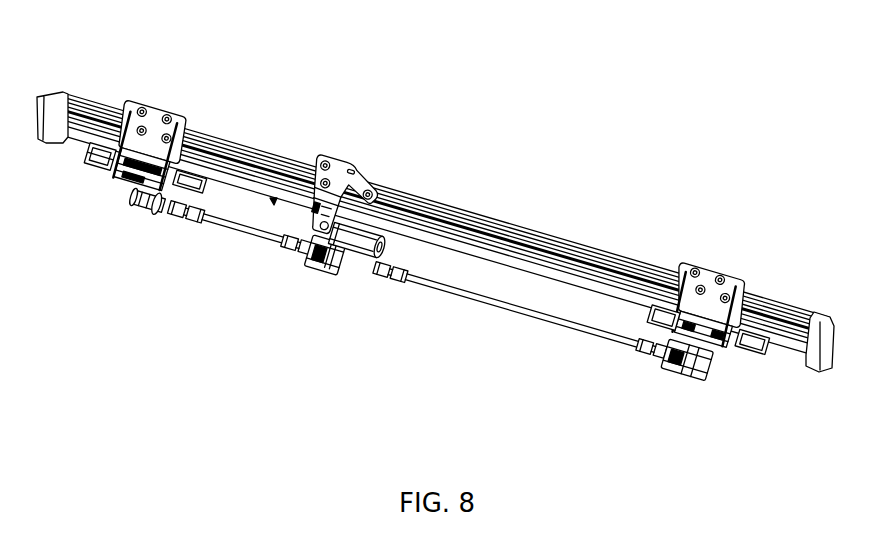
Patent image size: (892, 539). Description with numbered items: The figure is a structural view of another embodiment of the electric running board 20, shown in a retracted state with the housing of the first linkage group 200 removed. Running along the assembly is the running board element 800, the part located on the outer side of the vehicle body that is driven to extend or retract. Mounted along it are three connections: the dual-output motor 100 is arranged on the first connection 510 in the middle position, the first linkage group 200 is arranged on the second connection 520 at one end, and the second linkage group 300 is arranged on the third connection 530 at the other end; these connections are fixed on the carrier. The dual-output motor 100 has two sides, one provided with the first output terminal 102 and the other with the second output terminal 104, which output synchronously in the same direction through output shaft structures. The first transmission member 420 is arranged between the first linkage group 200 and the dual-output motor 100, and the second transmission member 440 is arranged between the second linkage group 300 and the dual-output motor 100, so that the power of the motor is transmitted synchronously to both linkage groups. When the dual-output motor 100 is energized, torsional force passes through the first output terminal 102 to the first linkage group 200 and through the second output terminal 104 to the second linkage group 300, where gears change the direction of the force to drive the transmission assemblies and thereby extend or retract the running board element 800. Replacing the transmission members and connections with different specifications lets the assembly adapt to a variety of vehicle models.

The electric running board 20 is at (433, 37).
The running board element 800 is at (412, 200).
The second connection 520 is at (155, 108).
The first connection 510 is at (340, 158).
The third connection 530 is at (714, 278).
The first linkage group 200 is at (95, 163).
The second linkage group 300 is at (683, 380).
The dual-output motor 100 is at (348, 247).
The first output terminal 102 is at (300, 267).
The second output terminal 104 is at (337, 250).
The first transmission member 420 is at (232, 232).
The second transmission member 440 is at (468, 303).